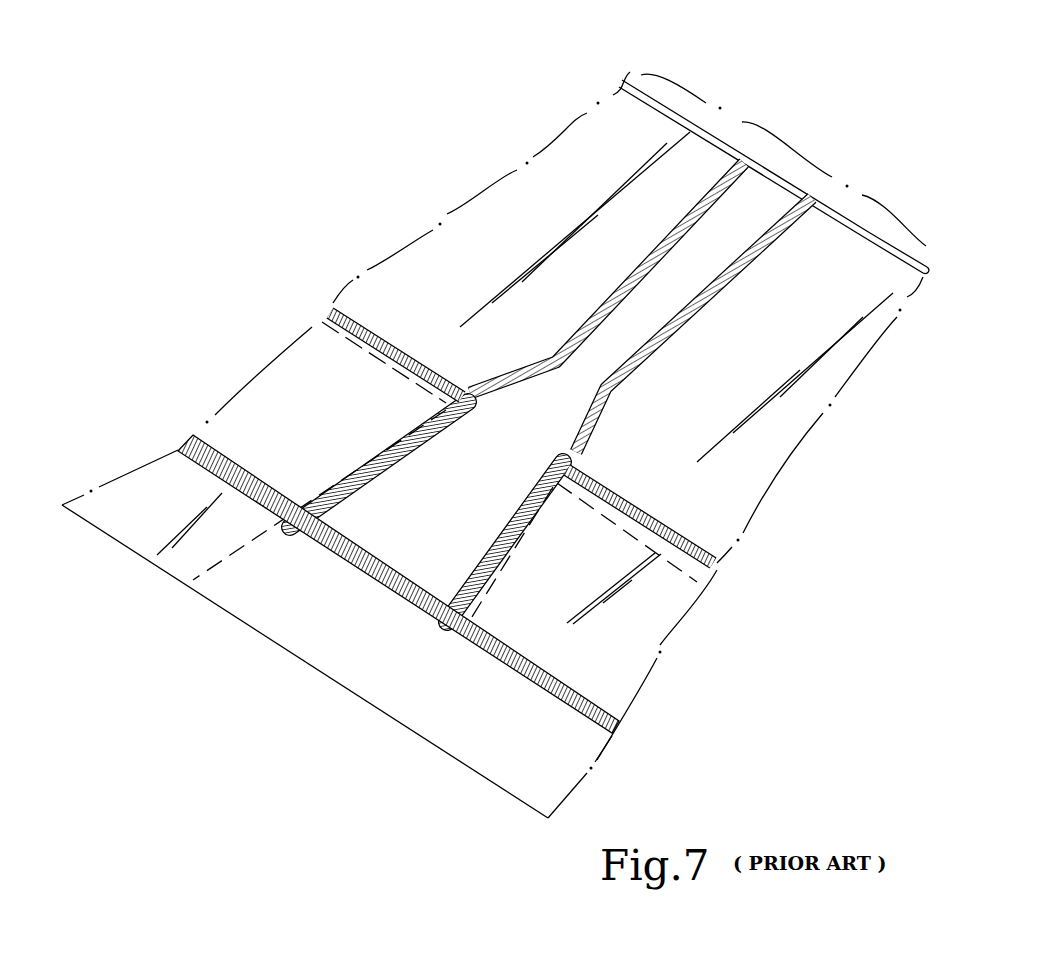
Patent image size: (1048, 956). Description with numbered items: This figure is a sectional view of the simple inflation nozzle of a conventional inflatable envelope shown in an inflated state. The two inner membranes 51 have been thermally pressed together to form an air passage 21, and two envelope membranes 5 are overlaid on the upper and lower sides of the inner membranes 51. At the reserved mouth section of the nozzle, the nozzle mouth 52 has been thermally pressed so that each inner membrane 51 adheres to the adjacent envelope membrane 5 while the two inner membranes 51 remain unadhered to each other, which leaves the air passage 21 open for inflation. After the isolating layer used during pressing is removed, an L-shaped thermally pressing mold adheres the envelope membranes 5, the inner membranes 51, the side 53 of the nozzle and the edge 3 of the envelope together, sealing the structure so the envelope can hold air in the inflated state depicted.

The edge of the envelope 3 is at (350, 337).
The envelope membrane 5 is at (887, 203).
The air passage 21 is at (748, 207).
The inner membrane 51 is at (902, 253).
The nozzle mouth 52 is at (380, 580).
The side of the nozzle 53 is at (363, 483).